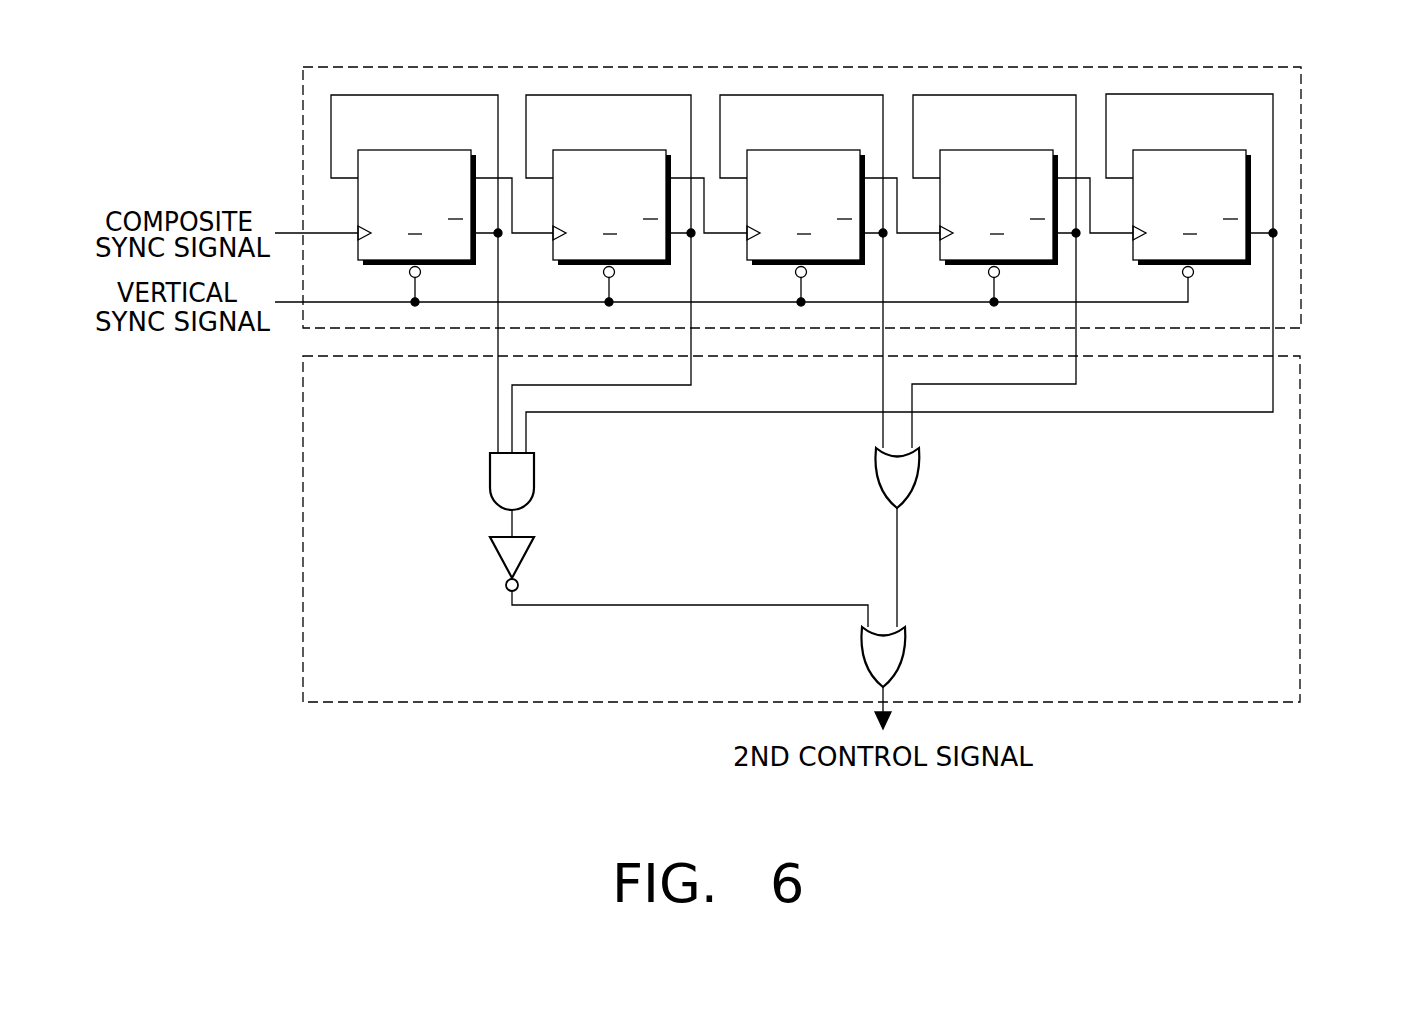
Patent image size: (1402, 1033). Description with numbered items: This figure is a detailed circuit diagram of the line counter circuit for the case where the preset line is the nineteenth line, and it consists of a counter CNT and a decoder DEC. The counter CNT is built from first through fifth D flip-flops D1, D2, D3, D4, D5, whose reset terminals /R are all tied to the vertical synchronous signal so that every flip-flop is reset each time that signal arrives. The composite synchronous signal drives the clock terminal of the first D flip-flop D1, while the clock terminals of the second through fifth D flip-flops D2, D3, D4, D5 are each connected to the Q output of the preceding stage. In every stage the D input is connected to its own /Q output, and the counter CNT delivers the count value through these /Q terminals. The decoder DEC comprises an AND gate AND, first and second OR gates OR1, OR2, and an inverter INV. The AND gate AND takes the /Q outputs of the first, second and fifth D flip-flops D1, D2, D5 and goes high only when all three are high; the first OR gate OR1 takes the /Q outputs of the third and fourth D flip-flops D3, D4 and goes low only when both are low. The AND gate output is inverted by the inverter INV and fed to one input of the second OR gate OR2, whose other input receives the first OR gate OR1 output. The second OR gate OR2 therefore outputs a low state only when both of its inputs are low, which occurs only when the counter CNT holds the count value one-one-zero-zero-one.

The first D flip-flop D1 is at (414, 150).
The second D flip-flop D2 is at (609, 150).
The third D flip-flop D3 is at (803, 150).
The fourth D flip-flop D4 is at (996, 150).
The fifth D flip-flop D5 is at (1189, 150).
The counter CNT is at (1301, 203).
The decoder DEC is at (1300, 521).
The AND gate AND is at (490, 473).
The inverter INV is at (500, 556).
The first OR gate OR1 is at (919, 466).
The second OR gate OR2 is at (905, 645).